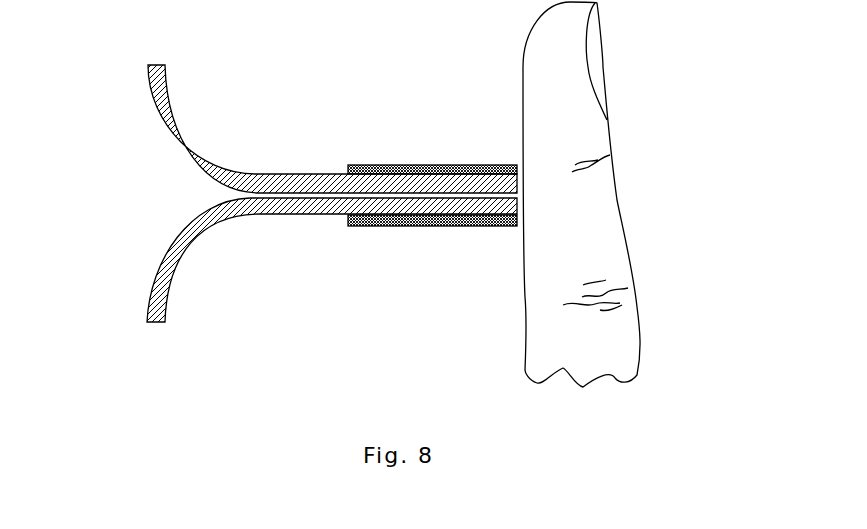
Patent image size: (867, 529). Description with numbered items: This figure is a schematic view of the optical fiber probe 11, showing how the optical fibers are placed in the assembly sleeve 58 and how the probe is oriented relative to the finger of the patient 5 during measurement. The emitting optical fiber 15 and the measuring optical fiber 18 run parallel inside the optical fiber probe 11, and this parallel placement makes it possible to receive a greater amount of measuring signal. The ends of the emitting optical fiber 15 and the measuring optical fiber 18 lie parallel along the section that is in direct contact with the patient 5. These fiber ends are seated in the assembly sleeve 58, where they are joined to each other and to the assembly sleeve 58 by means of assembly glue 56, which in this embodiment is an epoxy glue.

The patient 5 is at (583, 98).
The optical fiber probe 11 is at (287, 224).
The emitting optical fiber 15 is at (151, 108).
The measuring optical fiber 18 is at (145, 317).
The assembly glue 56 is at (450, 165).
The assembly sleeve 58 is at (468, 227).